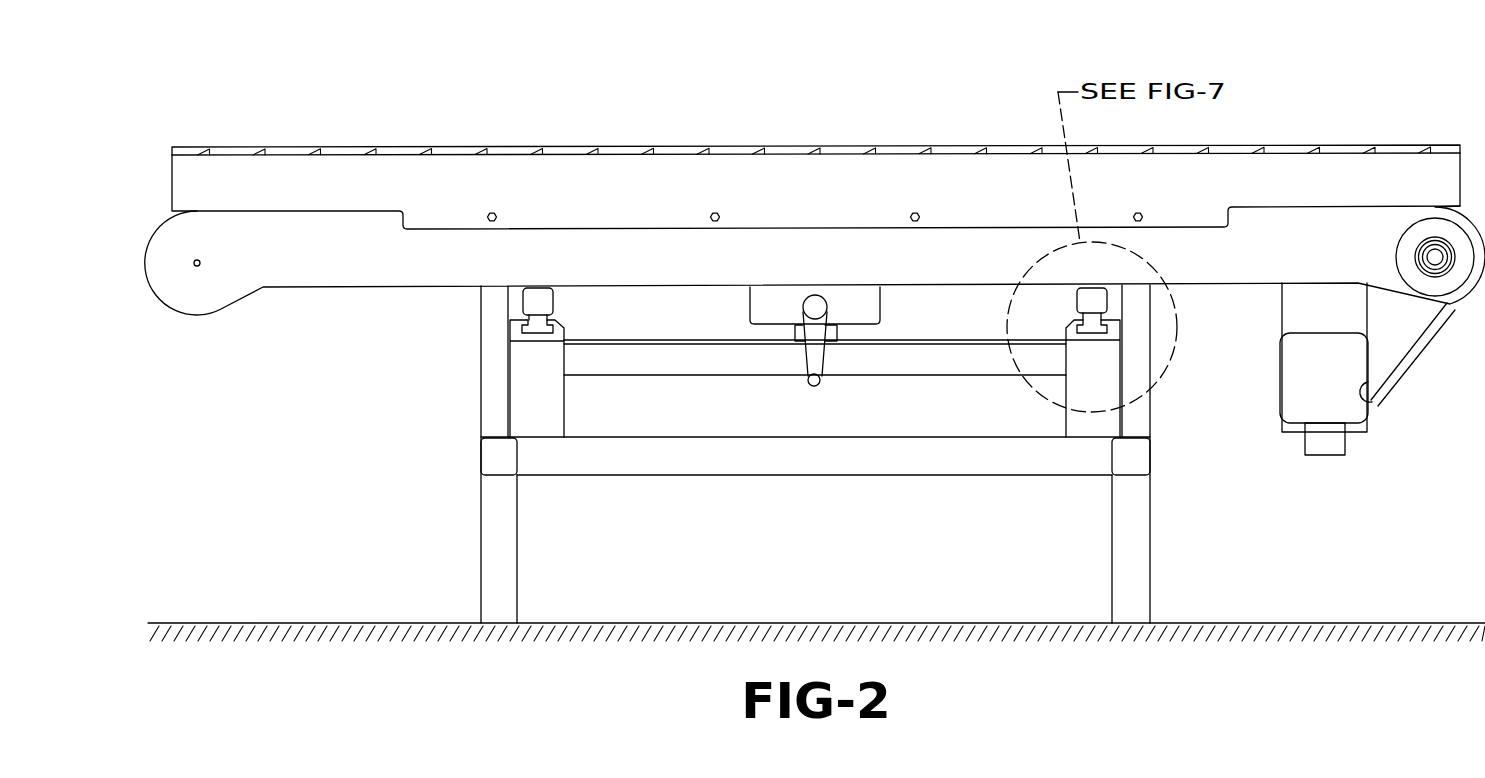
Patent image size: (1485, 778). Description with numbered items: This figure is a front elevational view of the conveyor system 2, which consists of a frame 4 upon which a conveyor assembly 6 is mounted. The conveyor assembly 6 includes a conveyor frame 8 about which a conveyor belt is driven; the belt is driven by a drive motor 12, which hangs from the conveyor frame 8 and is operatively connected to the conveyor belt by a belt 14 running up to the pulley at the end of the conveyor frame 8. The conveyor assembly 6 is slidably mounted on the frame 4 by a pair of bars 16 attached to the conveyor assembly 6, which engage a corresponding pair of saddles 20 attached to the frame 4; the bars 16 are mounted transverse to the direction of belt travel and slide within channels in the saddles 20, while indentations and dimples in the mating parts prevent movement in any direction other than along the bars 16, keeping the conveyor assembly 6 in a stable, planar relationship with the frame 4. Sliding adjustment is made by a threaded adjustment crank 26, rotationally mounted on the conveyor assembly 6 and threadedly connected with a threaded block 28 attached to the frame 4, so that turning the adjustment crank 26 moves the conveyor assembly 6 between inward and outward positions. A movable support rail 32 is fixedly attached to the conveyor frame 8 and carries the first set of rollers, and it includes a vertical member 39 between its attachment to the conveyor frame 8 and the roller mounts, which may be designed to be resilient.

The conveyor system 2 is at (698, 72).
The frame 4 is at (480, 528).
The conveyor assembly 6 is at (668, 135).
The conveyor frame 8 is at (348, 290).
The drive motor 12 is at (1298, 378).
The belt 14 is at (1410, 360).
The bar 16 is at (537, 322).
The saddle 20 is at (520, 330).
The threaded adjustment crank 26 is at (818, 355).
The threaded block 28 is at (795, 330).
The movable support rail 32 is at (455, 160).
The vertical member 39 is at (510, 177).